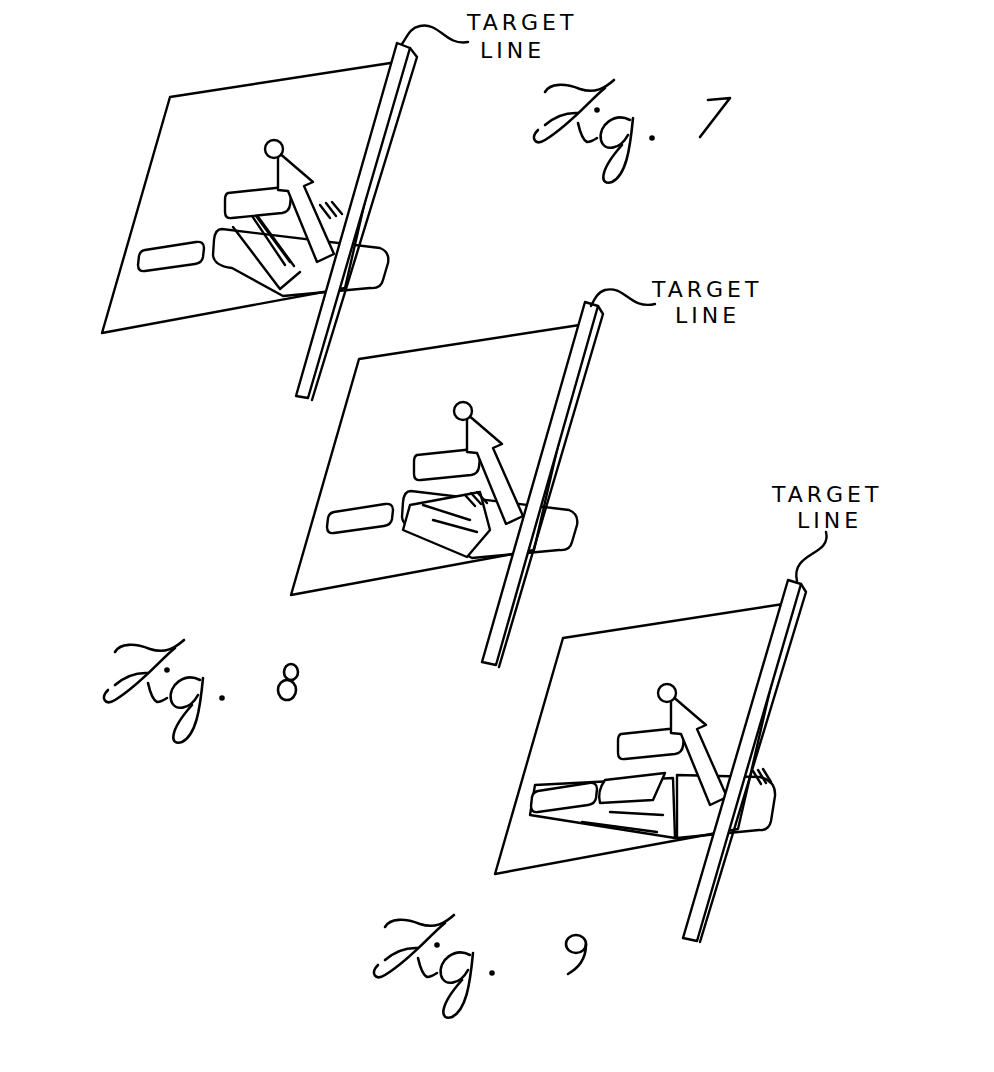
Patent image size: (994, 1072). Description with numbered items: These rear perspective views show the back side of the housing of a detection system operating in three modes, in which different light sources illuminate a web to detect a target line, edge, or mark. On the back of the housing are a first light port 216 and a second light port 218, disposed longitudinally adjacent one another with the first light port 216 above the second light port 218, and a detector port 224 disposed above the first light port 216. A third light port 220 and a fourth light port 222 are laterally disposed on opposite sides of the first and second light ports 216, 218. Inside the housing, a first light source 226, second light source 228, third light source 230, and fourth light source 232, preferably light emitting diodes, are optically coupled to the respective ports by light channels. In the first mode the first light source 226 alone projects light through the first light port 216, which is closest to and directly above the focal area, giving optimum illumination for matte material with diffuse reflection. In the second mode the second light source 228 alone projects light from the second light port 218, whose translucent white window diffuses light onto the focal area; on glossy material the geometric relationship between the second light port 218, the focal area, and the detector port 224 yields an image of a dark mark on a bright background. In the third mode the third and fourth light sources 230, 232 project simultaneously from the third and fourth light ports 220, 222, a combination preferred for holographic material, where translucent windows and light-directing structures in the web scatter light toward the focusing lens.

In FIG. 7, the first light port 216 is at (228, 163).
In FIG. 8, the first light port 216 is at (421, 425).
In FIG. 9, the first light port 216 is at (625, 704).
In FIG. 7, the first light source 226 is at (250, 193).
In FIG. 8, the first light source 226 is at (437, 454).
In FIG. 9, the first light source 226 is at (637, 734).
In FIG. 7, the second light port 218 is at (269, 297).
In FIG. 8, the second light port 218 is at (465, 577).
In FIG. 9, the second light port 218 is at (594, 781).
In FIG. 7, the second light source 228 is at (215, 262).
In FIG. 8, the second light source 228 is at (400, 522).
In FIG. 9, the second light source 228 is at (610, 785).
In FIG. 7, the third light port 220 is at (415, 197).
In FIG. 8, the third light port 220 is at (578, 468).
In FIG. 9, the third light port 220 is at (821, 776).
In FIG. 7, the third light source 230 is at (350, 224).
In FIG. 8, the third light source 230 is at (557, 472).
In FIG. 9, the third light source 230 is at (755, 782).
In FIG. 7, the fourth light port 222 is at (119, 269).
In FIG. 8, the fourth light port 222 is at (296, 526).
In FIG. 9, the fourth light port 222 is at (478, 829).
In FIG. 7, the fourth light source 232 is at (153, 260).
In FIG. 8, the fourth light source 232 is at (333, 520).
In FIG. 9, the fourth light source 232 is at (515, 845).
In FIG. 7, the detector port 224 is at (276, 139).
In FIG. 8, the detector port 224 is at (464, 404).
In FIG. 9, the detector port 224 is at (666, 686).